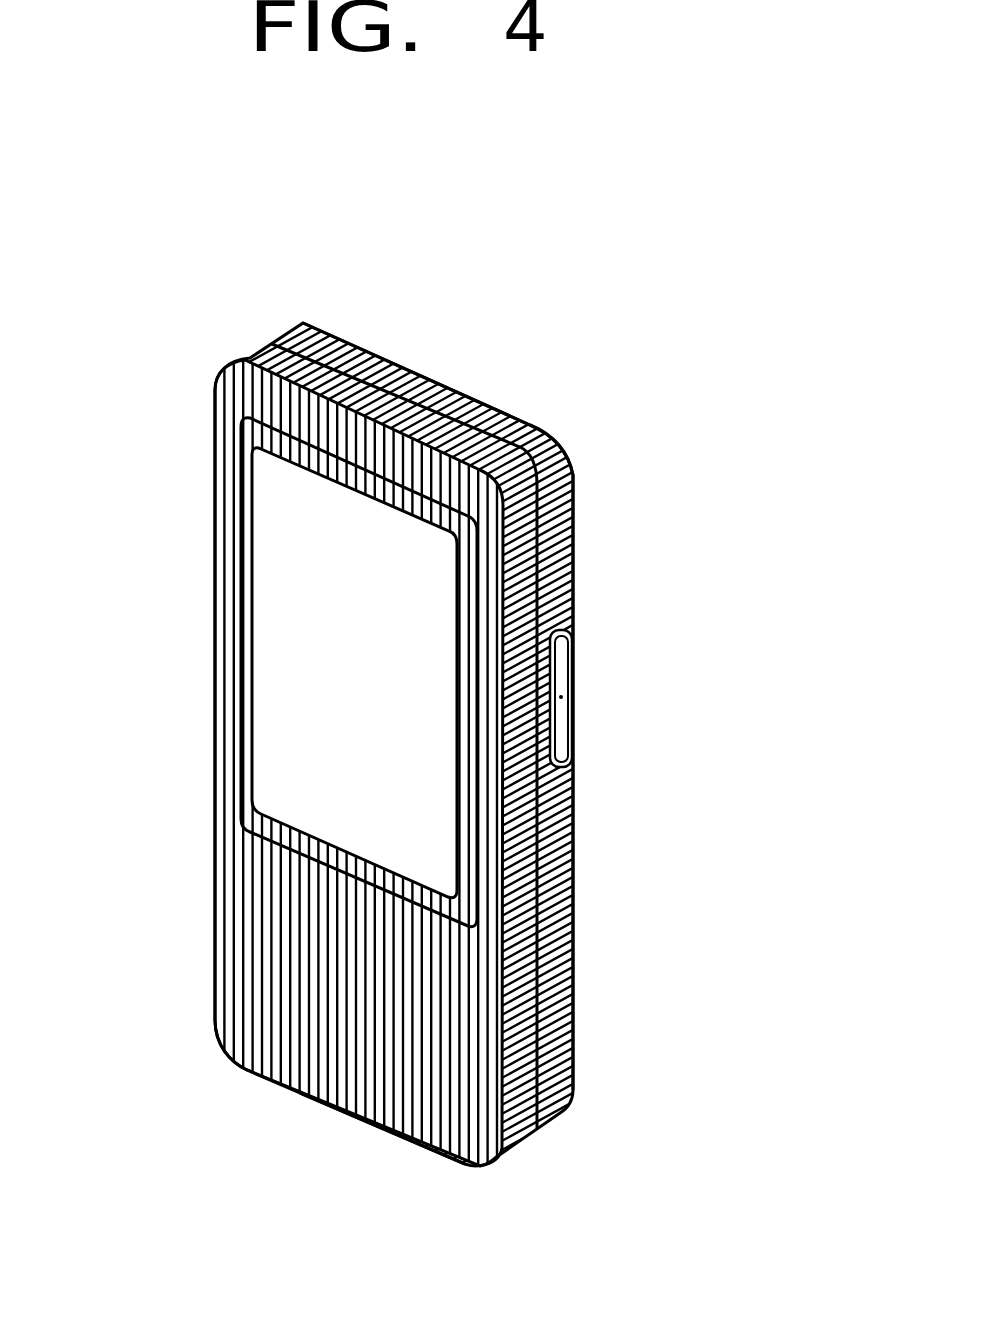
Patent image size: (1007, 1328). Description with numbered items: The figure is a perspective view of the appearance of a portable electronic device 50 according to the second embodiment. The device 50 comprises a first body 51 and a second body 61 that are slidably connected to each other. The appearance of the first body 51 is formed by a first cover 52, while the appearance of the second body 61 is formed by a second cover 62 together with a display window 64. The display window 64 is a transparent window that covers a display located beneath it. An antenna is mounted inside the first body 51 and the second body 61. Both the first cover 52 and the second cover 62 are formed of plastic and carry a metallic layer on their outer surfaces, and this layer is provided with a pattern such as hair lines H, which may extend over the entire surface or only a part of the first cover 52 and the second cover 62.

The portable electronic device 50 is at (165, 333).
The first body 51 is at (458, 364).
The first cover 52 is at (545, 428).
The second body 61 is at (194, 728).
The second cover 62 is at (227, 858).
The display window 64 is at (270, 525).
The hair lines H is at (393, 1135).